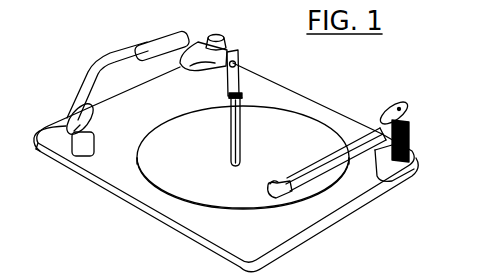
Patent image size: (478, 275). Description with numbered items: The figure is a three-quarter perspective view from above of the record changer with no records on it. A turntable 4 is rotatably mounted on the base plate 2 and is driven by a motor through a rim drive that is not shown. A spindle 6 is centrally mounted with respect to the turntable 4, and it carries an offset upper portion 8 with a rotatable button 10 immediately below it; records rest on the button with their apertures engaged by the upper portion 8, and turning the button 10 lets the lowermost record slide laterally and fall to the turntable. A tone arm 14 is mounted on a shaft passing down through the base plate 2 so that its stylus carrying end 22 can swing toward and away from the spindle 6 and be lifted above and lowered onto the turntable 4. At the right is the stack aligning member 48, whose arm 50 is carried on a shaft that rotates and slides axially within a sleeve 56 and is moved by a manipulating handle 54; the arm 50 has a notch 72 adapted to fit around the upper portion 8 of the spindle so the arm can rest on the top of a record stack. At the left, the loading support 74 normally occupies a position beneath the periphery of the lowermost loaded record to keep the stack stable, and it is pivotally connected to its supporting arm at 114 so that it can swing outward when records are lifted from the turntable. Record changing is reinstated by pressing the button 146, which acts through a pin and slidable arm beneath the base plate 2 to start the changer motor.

The base plate 2 is at (340, 118).
The turntable 4 is at (290, 120).
The spindle 6 is at (236, 129).
The offset upper portion 8 is at (237, 72).
The rotatable button 10 is at (240, 97).
The tone arm 14 is at (112, 58).
The stylus carrying end 22 is at (153, 44).
The button 146 is at (220, 36).
The loading support 74 is at (93, 108).
The pivotal connection 114 is at (38, 151).
The stack aligning member 48 is at (345, 180).
The arm 50 is at (278, 201).
The notch 72 is at (274, 182).
The manipulating handle 54 is at (390, 105).
The sleeve 56 is at (409, 143).